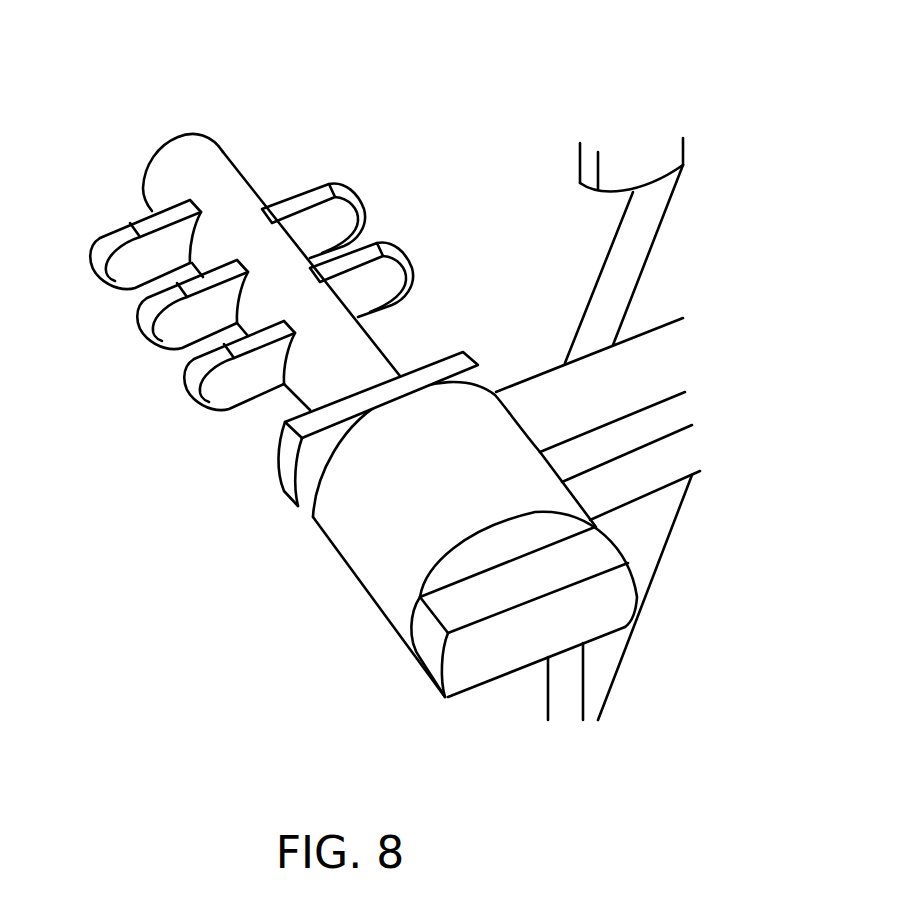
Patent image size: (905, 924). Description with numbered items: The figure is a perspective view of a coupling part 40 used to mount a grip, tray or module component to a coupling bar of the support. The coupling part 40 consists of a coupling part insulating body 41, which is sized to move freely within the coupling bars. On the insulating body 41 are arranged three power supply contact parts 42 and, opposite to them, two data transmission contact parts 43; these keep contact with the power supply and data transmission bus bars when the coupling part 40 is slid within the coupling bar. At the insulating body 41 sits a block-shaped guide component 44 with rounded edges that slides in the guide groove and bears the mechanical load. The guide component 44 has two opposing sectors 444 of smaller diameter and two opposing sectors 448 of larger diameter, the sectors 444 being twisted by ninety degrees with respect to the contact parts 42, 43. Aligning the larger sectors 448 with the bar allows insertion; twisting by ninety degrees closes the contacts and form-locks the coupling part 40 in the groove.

The coupling part 40 is at (409, 118).
The coupling part insulating body 41 is at (190, 155).
The power supply contact parts 42 is at (186, 394).
The data transmission contact parts 43 is at (328, 184).
The guide component 44 is at (258, 481).
The opposing sectors 444 is at (383, 377).
The opposing sectors 448 is at (285, 498).